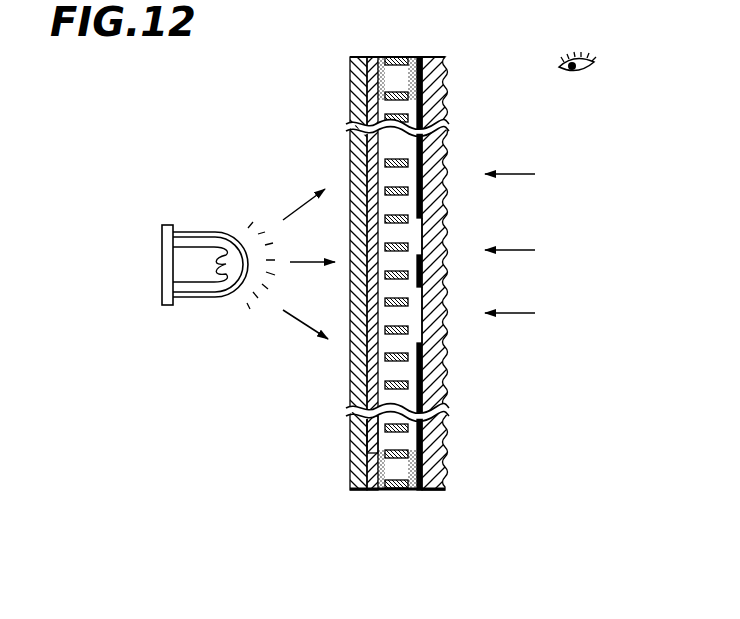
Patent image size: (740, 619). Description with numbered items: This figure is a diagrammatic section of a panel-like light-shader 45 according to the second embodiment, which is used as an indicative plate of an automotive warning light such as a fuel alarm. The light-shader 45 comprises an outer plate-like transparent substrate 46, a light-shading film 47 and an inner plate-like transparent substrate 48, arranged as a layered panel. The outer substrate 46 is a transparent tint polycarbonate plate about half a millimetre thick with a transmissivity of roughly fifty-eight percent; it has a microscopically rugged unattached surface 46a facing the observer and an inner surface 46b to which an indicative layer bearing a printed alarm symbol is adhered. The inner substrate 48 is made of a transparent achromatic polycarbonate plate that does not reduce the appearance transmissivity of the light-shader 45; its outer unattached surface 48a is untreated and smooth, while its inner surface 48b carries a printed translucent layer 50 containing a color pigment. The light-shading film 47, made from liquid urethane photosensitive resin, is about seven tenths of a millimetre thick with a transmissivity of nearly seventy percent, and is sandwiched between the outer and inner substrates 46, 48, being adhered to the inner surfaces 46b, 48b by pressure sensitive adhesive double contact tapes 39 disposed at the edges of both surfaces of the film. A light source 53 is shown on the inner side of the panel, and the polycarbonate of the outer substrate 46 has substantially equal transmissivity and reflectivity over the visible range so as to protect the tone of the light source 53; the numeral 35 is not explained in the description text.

The observer's eye 35 is at (572, 58).
The pressure sensitive adhesive double contact tapes 39 is at (378, 495).
The light-shader 45 is at (411, 277).
The outer plate-like transparent substrate 46 is at (447, 383).
The microscopically rugged unattached surface 46a is at (447, 272).
The inner surface 46b is at (447, 341).
The light-shading film 47 is at (402, 58).
The inner plate-like transparent substrate 48 is at (358, 400).
The outer unattached surface 48a is at (372, 437).
The inner surface 48b is at (370, 370).
The printed translucent layer 50 is at (378, 457).
The light source 53 is at (208, 242).